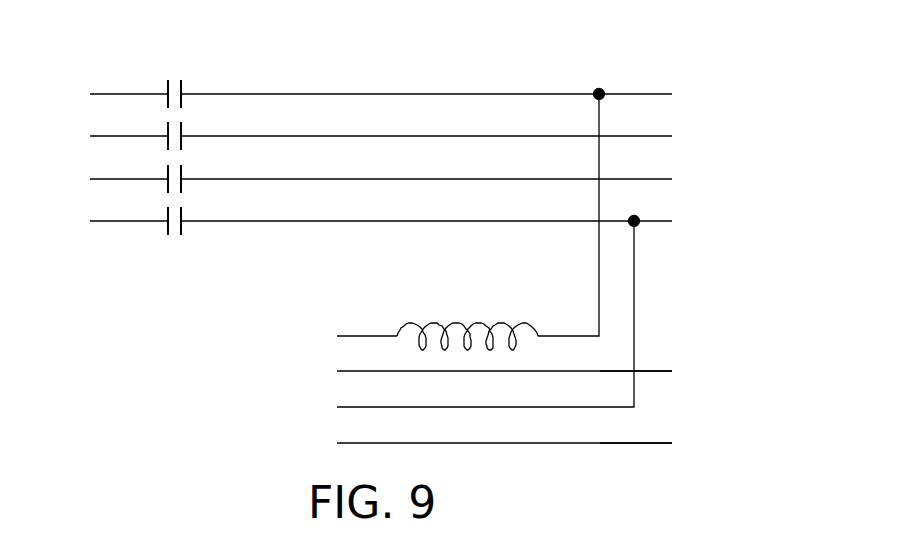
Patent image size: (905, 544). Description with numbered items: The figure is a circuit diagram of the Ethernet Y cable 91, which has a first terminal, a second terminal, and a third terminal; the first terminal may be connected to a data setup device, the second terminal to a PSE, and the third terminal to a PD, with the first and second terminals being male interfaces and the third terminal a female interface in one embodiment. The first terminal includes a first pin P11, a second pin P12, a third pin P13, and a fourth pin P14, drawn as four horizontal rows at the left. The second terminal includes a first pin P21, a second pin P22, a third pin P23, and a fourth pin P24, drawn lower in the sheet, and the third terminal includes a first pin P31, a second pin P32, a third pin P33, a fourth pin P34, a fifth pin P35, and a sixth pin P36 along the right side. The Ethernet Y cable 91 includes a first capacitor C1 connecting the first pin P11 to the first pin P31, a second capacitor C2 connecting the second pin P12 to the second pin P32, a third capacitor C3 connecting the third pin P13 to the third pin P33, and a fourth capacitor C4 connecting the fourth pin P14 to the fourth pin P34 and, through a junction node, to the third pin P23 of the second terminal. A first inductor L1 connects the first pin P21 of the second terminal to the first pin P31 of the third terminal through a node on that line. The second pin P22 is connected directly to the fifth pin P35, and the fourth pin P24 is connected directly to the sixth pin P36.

The Ethernet Y cable 91 is at (775, 26).
The first pin of the first terminal P11 is at (110, 94).
The second pin of the first terminal P12 is at (110, 136).
The third pin of the first terminal P13 is at (110, 179).
The fourth pin of the first terminal P14 is at (110, 221).
The first pin of the second terminal P21 is at (349, 336).
The second pin of the second terminal P22 is at (487, 371).
The third pin of the second terminal P23 is at (468, 320).
The fourth pin of the second terminal P24 is at (487, 443).
The first pin of the third terminal P31 is at (444, 94).
The second pin of the third terminal P32 is at (444, 136).
The third pin of the third terminal P33 is at (444, 179).
The fourth pin of the third terminal P34 is at (444, 221).
The fifth pin of the third terminal P35 is at (653, 371).
The sixth pin of the third terminal P36 is at (653, 443).
The first capacitor C1 is at (187, 88).
The second capacitor C2 is at (187, 130).
The third capacitor C3 is at (187, 173).
The fourth capacitor C4 is at (187, 215).
The first inductor L1 is at (498, 222).